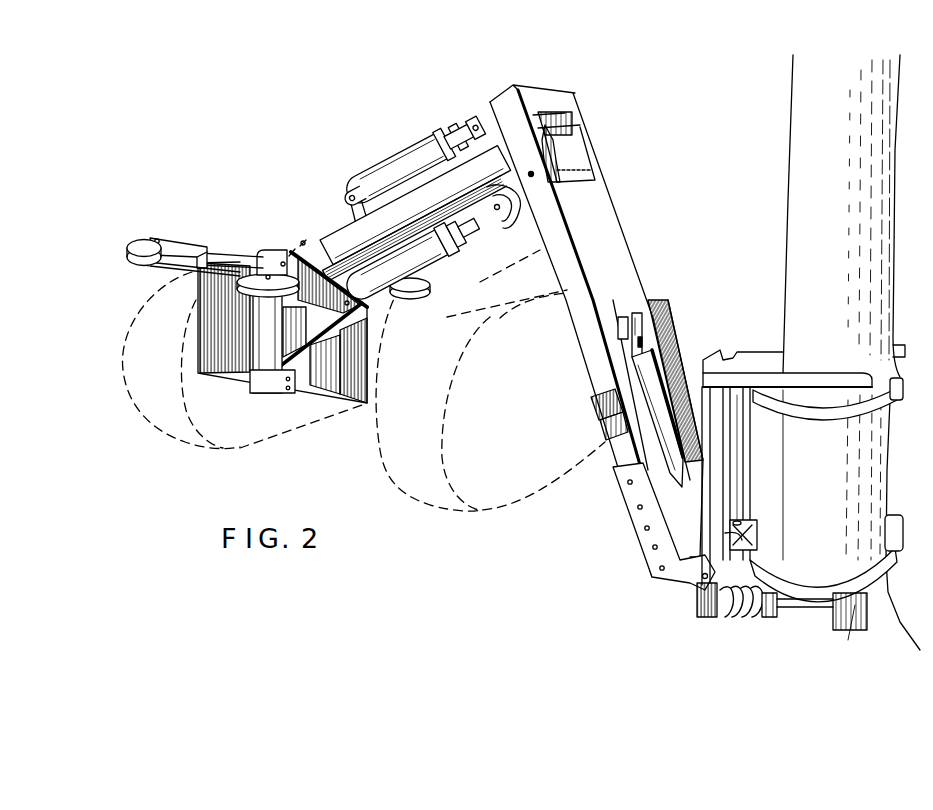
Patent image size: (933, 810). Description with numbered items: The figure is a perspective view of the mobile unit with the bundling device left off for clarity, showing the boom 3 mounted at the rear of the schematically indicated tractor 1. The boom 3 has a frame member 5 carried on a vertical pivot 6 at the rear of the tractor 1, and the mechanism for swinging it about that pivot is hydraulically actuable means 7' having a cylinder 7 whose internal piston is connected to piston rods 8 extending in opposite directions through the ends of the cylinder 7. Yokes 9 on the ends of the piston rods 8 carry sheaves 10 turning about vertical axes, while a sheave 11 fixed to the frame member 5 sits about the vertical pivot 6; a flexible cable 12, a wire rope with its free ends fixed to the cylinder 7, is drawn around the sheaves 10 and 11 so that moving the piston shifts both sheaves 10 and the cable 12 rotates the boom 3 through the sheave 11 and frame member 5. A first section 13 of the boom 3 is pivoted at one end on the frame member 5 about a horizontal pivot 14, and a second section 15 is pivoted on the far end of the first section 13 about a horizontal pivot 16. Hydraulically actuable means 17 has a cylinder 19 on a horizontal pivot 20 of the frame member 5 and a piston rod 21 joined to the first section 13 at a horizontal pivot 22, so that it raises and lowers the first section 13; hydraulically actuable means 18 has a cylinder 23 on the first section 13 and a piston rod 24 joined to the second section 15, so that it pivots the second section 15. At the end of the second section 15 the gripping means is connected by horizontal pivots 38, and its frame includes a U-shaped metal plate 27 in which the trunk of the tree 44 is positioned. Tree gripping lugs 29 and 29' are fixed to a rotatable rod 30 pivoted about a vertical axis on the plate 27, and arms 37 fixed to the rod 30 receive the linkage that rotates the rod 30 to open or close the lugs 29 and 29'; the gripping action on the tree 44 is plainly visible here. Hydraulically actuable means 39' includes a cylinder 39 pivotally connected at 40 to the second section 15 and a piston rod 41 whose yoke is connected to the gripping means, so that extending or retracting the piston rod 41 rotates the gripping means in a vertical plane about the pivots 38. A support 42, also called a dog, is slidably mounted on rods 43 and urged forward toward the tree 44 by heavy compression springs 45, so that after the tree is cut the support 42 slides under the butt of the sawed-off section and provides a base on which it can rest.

The tractor 1 is at (127, 320).
The boom 3 is at (590, 330).
The frame member 5 is at (303, 327).
The vertical pivot 6 is at (253, 391).
The cylinder 7 is at (270, 241).
The hydraulically actuable means 7' is at (308, 220).
The piston rods 8 is at (232, 255).
The yokes 9 is at (183, 250).
The sheaves 10 is at (140, 240).
The sheave 11 is at (240, 291).
The flexible cable 12 is at (186, 271).
The first section 13 is at (423, 200).
The horizontal pivot 14 is at (292, 250).
The second section 15 is at (614, 242).
The horizontal pivot 16 is at (531, 176).
The hydraulically actuable means 17 is at (454, 269).
The hydraulically actuable means 18 is at (431, 128).
The cylinder 19 is at (410, 268).
The horizontal pivot 20 is at (352, 316).
The piston rod 21 is at (468, 243).
The horizontal pivot 22 is at (503, 222).
The cylinder 23 is at (378, 180).
The piston rod 24 is at (478, 126).
The U-shaped metal plate 27 is at (760, 355).
The tree gripping lug 29 is at (828, 413).
The tree gripping lug 29' is at (826, 558).
The rotatable rod 30 is at (748, 470).
The arms 37 is at (758, 528).
The horizontal pivots 38 is at (701, 581).
The cylinder 39 is at (664, 399).
The hydraulically actuable means 39' is at (691, 428).
The horizontal pivot 40 is at (640, 333).
The piston rod 41 is at (640, 490).
The support 42 is at (770, 620).
The rods 43 is at (822, 612).
The tree 44 is at (792, 135).
The compression springs 45 is at (740, 620).